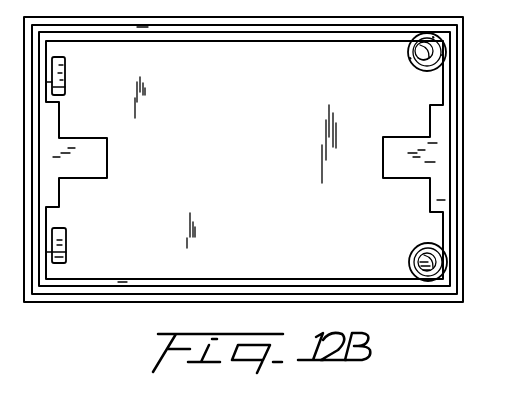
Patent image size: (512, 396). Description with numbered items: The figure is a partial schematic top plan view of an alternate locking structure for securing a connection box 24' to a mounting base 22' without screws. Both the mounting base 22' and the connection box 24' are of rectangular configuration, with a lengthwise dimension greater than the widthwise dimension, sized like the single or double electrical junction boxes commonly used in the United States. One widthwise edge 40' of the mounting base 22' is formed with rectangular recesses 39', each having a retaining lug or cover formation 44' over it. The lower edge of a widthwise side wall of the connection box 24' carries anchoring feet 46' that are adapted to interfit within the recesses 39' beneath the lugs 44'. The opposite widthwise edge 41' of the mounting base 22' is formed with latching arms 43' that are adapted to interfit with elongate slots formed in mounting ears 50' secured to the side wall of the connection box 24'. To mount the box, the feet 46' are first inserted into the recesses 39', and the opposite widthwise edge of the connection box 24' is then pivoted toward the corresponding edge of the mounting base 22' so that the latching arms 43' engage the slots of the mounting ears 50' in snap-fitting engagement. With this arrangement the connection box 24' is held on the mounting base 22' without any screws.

The connection box 24' is at (268, 159).
The widthwise edge of mounting base 40' is at (244, 160).
The mounting base 22' is at (235, 162).
The anchoring feet 46' is at (85, 76).
The retaining lugs 44' is at (86, 240).
The rectangular recesses 39' is at (89, 257).
The opposite widthwise edge of mounting base 41' is at (414, 66).
The mounting ears 50' is at (420, 244).
The latching arms 43' is at (399, 256).